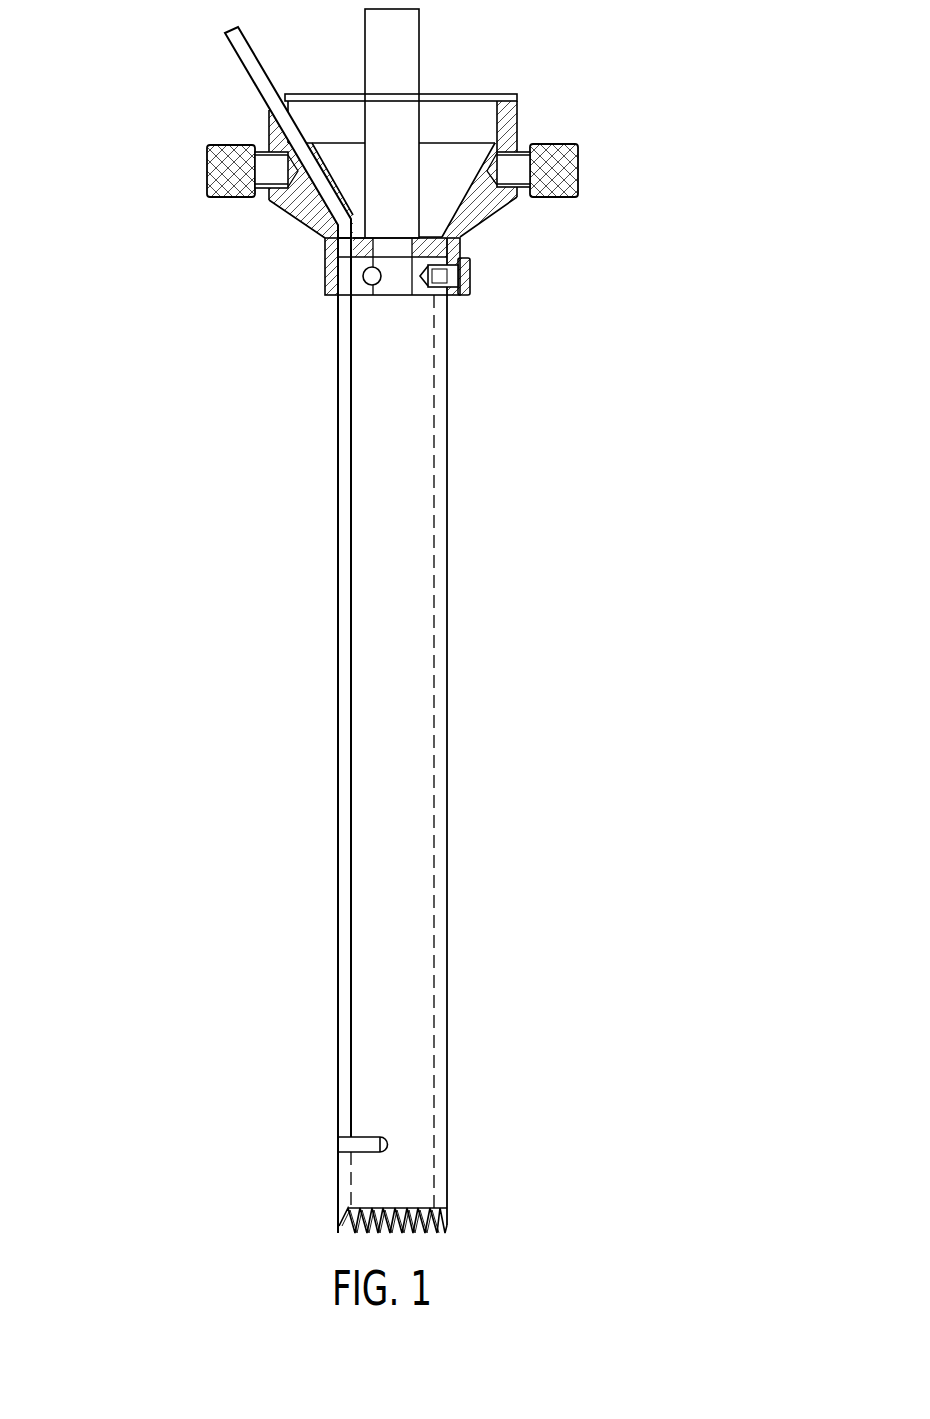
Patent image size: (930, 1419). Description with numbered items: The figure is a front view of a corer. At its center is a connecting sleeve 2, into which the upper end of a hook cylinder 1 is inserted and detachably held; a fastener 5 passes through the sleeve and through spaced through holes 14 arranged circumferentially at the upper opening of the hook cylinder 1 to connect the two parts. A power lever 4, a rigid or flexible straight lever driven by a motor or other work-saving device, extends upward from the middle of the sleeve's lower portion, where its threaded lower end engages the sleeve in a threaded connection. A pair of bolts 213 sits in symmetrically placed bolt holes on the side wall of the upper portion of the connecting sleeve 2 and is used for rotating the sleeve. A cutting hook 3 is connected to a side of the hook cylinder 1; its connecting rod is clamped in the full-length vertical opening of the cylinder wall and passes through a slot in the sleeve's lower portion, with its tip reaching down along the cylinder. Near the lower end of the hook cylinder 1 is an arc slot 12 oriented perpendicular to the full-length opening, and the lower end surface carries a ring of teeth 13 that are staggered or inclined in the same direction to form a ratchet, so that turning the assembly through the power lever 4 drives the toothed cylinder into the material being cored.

The hook cylinder 1 is at (447, 877).
The connecting sleeve 2 is at (493, 218).
The cutting hook 3 is at (277, 45).
The power lever 4 is at (413, 67).
The fastener 5 is at (473, 288).
The arc slot 12 is at (339, 1142).
The tooth 13 is at (435, 1233).
The through hole 14 is at (366, 279).
The bolt 213 is at (580, 171).